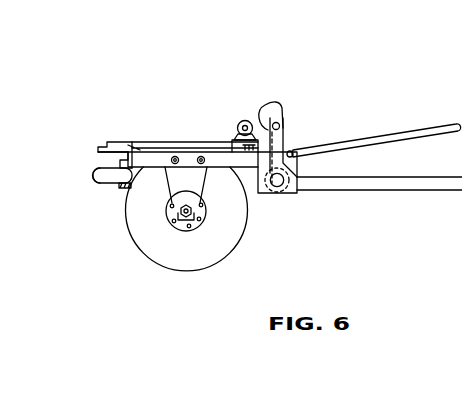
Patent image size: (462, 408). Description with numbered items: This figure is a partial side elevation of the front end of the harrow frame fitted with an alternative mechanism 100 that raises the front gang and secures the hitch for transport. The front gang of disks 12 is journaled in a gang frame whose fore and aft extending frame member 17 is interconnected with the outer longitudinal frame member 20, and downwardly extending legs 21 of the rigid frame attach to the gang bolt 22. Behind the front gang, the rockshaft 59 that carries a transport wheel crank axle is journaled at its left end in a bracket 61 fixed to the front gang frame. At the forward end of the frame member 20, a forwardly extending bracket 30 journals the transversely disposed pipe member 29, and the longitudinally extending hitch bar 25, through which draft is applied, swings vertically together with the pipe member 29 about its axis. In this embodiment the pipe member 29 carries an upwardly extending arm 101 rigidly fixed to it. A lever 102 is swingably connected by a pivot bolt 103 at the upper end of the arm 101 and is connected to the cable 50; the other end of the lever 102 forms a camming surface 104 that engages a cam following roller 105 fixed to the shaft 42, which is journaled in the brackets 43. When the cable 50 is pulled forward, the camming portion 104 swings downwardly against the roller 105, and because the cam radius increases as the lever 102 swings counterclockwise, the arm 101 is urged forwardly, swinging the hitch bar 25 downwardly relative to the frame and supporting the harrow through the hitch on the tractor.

The front gang of disks 12 is at (175, 272).
The fore and aft extending frame member 17 is at (143, 150).
The interconnecting frame member 20 is at (167, 148).
The downwardly extending legs 21 is at (197, 182).
The gang bolt 22 is at (182, 214).
The hitch bar 25 is at (434, 188).
The pipe member 29 is at (276, 186).
The bracket 30 is at (289, 193).
The shaft 42 is at (237, 128).
The bracket 43 is at (233, 148).
The cable 50 is at (393, 137).
The rockshaft 59 is at (104, 180).
The bracket 61 is at (125, 189).
The alternative mechanism 100 is at (271, 92).
The arm 101 is at (276, 147).
The lever 102 is at (295, 156).
The pivot bolt 103 is at (280, 124).
The camming surface 104 is at (271, 110).
The cam following roller 105 is at (243, 124).